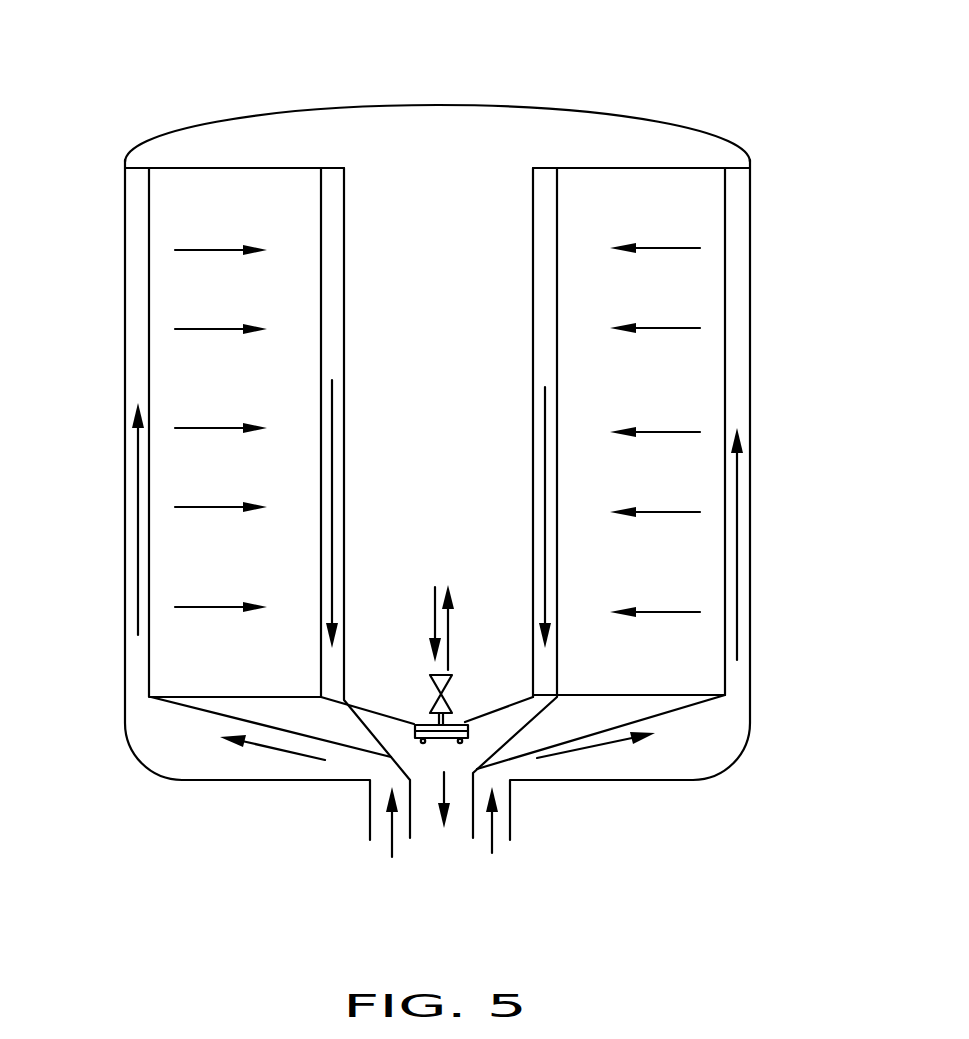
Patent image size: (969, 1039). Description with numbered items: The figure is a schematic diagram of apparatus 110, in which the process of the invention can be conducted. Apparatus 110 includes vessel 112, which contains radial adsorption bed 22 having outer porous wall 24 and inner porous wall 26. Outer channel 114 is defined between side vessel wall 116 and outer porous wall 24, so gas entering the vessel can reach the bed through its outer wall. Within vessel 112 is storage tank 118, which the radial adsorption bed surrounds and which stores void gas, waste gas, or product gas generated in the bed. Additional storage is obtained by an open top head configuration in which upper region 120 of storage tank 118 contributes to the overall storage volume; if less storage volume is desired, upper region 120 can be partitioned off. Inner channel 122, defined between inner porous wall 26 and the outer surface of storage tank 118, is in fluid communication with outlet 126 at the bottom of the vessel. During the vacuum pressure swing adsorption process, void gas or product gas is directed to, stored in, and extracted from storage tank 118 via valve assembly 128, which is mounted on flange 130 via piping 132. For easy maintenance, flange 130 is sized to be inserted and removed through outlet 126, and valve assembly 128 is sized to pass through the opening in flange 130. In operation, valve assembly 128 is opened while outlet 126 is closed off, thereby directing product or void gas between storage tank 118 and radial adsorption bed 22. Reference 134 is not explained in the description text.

The apparatus 110 is at (708, 68).
The vessel 112 is at (758, 247).
The outer channel 114 is at (133, 324).
The side vessel wall 116 is at (749, 352).
The storage tank 118 is at (328, 221).
The upper region 120 is at (329, 133).
The inner channel 122 is at (329, 356).
The outlet 126 is at (463, 827).
The valve assembly 128 is at (430, 684).
The flange 130 is at (458, 743).
The piping 132 is at (462, 720).
The right central channel wall 134 is at (534, 380).
The radial adsorption bed 22 is at (727, 472).
The outer porous wall 24 is at (149, 402).
The inner porous wall 26 is at (322, 498).